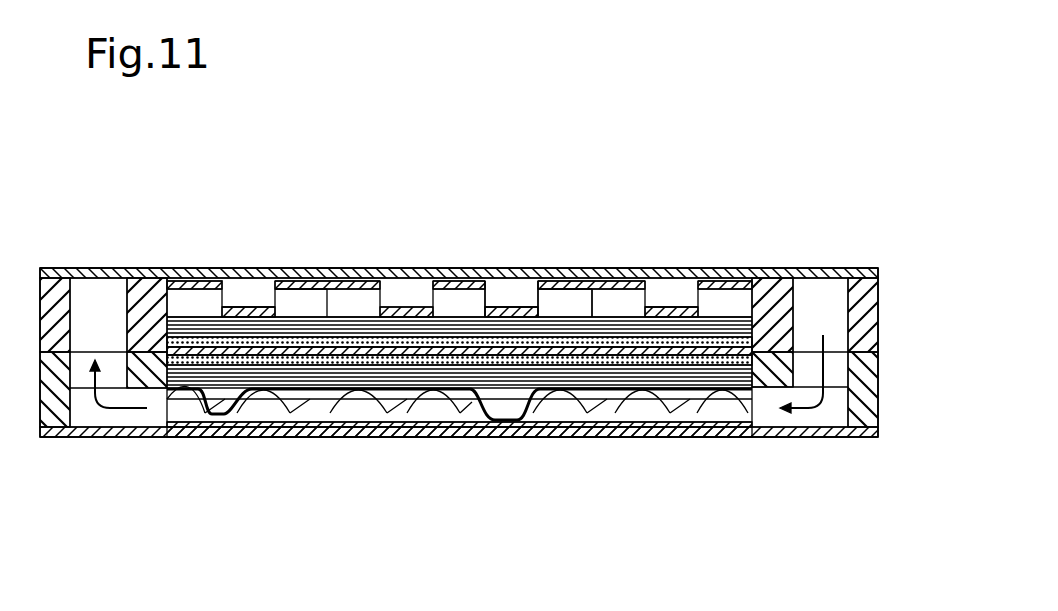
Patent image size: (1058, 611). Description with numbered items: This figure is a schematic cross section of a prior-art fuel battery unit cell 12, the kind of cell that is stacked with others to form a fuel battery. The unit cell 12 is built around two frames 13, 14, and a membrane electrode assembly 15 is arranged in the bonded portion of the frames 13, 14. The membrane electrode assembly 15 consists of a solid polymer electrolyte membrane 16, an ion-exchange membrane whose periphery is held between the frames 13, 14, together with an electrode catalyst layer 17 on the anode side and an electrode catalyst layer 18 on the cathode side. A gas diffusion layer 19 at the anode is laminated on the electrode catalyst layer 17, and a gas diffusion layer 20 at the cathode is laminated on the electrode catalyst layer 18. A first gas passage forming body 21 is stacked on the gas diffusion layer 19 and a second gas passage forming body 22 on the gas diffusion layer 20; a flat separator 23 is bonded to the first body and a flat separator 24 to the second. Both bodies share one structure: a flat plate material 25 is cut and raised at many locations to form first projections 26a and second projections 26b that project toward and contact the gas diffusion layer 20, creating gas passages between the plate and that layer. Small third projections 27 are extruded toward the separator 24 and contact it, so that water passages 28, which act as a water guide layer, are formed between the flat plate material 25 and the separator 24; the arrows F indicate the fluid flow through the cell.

The unit cell 12 is at (667, 253).
The frame 13 is at (872, 298).
The frame 14 is at (872, 385).
The membrane electrode assembly 15 is at (454, 315).
The solid polymer electrolyte membrane 16 is at (363, 347).
The electrode catalyst layer 17 is at (307, 338).
The electrode catalyst layer 18 is at (412, 338).
The gas diffusion layer 19 is at (453, 325).
The gas diffusion layer 20 is at (243, 385).
The first gas passage forming body 21 is at (420, 285).
The second gas passage forming body 22 is at (407, 403).
The flat separator 23 is at (494, 270).
The flat separator 24 is at (427, 437).
The flat plate material 25 is at (175, 281).
The first projection 26a is at (683, 295).
The second projection 26b is at (224, 305).
The third projection 27 is at (293, 295).
The water passage 28 is at (570, 284).
The fluid flow F is at (197, 405).